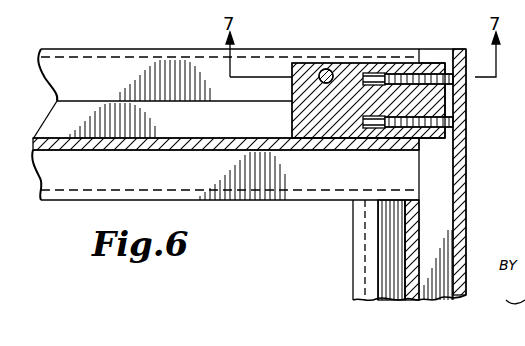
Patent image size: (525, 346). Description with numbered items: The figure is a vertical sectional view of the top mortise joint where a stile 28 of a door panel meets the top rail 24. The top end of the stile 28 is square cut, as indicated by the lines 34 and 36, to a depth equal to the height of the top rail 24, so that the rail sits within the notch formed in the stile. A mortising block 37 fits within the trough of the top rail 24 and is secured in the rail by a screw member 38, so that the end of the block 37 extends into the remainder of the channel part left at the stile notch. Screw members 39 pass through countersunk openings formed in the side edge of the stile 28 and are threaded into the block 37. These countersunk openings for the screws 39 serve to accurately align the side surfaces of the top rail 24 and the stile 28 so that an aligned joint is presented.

The top rail 24 is at (154, 48).
The stile 28 is at (466, 230).
The cut line 34 is at (370, 205).
The cut line 36 is at (419, 60).
The mortising block 37 is at (292, 119).
The screw member 38 is at (324, 69).
The screw member 39 is at (459, 88).